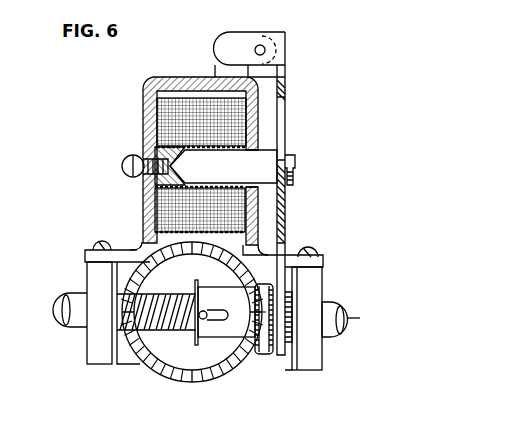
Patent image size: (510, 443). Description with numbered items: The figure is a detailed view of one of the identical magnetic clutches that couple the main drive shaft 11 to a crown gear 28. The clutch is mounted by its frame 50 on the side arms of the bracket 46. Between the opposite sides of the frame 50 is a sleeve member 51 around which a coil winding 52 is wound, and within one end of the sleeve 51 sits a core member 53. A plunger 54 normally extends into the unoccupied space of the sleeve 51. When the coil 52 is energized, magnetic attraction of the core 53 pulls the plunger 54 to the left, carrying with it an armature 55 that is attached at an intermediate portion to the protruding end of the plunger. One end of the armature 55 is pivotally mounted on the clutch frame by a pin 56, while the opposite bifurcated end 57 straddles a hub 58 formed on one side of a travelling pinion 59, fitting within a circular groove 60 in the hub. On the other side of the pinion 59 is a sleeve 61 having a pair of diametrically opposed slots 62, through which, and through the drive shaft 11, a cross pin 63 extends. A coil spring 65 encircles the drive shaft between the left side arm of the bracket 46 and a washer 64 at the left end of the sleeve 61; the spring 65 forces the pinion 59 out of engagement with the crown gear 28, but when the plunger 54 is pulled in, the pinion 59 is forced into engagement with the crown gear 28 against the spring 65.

The main drive shaft 11 is at (328, 333).
The crown gear 28 is at (187, 381).
The bracket 46 is at (90, 352).
The frame 50 is at (185, 77).
The sleeve member 51 is at (260, 147).
The coil winding 52 is at (148, 117).
The core member 53 is at (141, 177).
The plunger 54 is at (232, 168).
The armature 55 is at (287, 208).
The pin 56 is at (259, 44).
The bifurcated end 57 is at (280, 357).
The hub 58 is at (292, 318).
The travelling pinion 59 is at (263, 356).
The circular groove 60 is at (288, 297).
The sleeve 61 is at (228, 296).
The slots 62 is at (218, 321).
The cross pin 63 is at (204, 310).
The washer 64 is at (195, 338).
The coil spring 65 is at (155, 295).